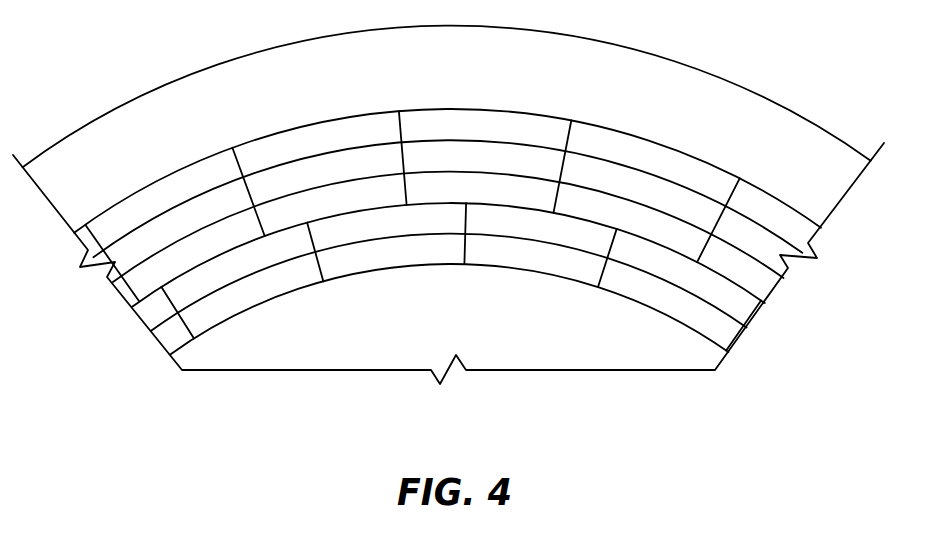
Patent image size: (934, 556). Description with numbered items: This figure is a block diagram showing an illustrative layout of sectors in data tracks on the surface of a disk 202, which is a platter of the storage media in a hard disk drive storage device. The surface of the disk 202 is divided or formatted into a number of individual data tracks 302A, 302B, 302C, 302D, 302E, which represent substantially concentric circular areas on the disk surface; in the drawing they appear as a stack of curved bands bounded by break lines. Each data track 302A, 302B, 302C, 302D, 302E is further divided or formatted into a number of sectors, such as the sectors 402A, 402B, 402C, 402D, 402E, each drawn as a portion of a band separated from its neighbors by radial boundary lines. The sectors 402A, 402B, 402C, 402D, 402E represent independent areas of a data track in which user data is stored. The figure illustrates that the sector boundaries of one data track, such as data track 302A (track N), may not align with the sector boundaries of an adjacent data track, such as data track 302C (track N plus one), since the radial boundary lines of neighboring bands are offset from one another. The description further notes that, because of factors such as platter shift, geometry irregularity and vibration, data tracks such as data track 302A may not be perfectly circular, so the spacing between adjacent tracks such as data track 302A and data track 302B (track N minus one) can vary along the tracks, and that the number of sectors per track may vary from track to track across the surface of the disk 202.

The disk 202 is at (484, 81).
The sector 402A is at (325, 151).
The sector 402B is at (353, 179).
The sector 402C is at (370, 206).
The sector 402D is at (408, 230).
The sector 402E is at (418, 263).
The data track 302A is at (777, 298).
The data track 302B is at (798, 270).
The data track 302C is at (763, 322).
The data track 302D is at (818, 245).
The data track 302E is at (742, 347).